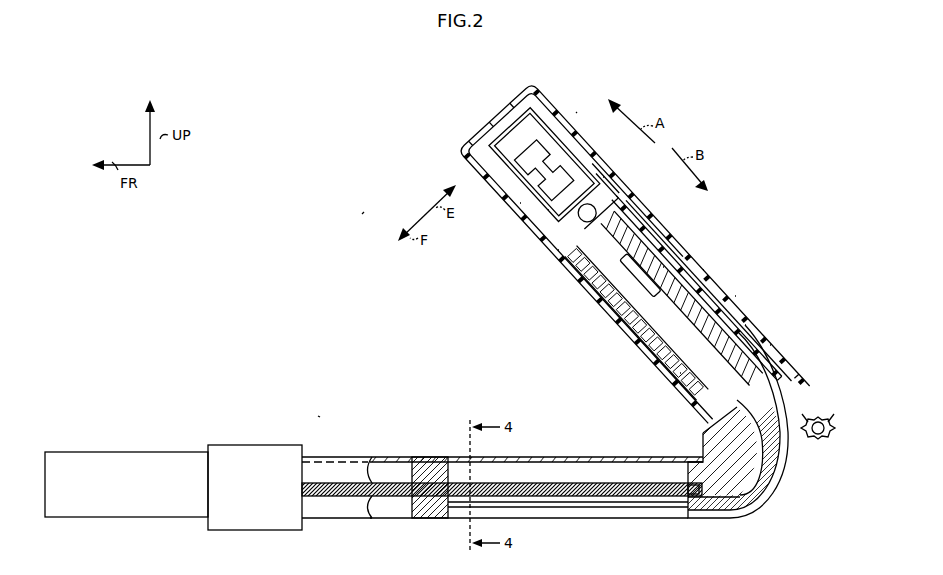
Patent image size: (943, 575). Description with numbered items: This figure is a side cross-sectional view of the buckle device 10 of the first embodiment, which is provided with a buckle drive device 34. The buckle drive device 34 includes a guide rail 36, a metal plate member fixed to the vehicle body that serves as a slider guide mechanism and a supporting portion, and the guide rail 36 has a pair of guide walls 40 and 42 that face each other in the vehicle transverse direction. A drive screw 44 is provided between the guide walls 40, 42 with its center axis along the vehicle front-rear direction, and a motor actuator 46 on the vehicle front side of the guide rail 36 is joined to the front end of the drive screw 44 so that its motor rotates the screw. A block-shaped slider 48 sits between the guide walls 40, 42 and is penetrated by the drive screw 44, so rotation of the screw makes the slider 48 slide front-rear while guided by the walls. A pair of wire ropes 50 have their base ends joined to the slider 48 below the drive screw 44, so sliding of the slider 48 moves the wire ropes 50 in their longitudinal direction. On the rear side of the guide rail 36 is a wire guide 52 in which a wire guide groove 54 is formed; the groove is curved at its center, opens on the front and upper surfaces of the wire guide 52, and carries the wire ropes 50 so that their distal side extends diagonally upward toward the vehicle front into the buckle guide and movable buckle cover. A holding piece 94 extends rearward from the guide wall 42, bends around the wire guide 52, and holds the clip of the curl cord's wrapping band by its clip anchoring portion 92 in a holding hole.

The buckle device 10 is at (366, 212).
The buckle drive device 34 is at (319, 415).
The guide rail 36 is at (545, 456).
The guide wall 40 is at (338, 520).
The guide wall 42 is at (390, 515).
The drive screw 44 is at (385, 482).
The motor actuator 46 is at (190, 452).
The slider 48 is at (424, 464).
The wire ropes 50 is at (565, 505).
The wire guide 52 is at (763, 492).
The wire guide groove 54 is at (716, 507).
The clip anchoring portion 92 is at (820, 440).
The holding piece 94 is at (832, 428).